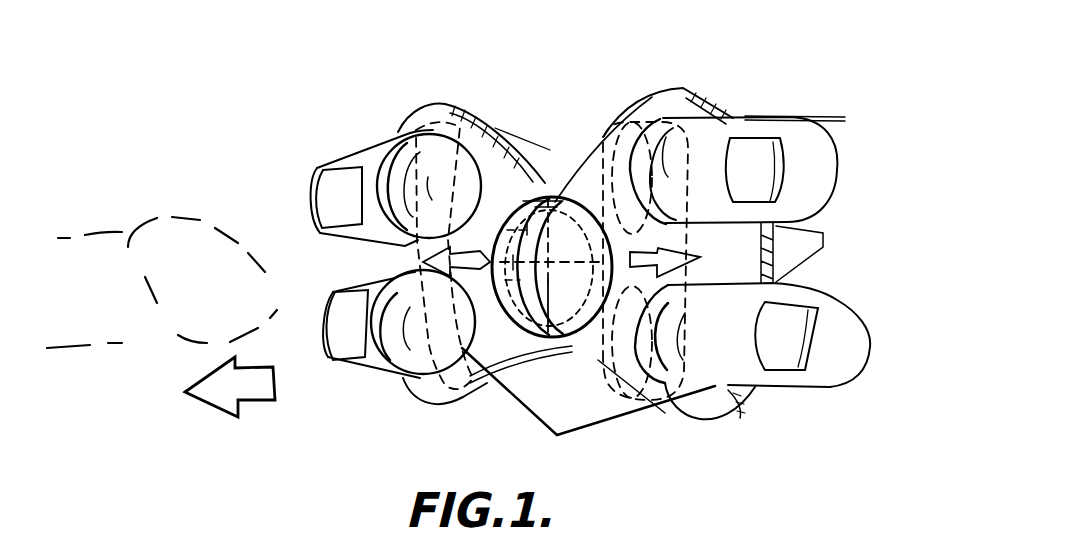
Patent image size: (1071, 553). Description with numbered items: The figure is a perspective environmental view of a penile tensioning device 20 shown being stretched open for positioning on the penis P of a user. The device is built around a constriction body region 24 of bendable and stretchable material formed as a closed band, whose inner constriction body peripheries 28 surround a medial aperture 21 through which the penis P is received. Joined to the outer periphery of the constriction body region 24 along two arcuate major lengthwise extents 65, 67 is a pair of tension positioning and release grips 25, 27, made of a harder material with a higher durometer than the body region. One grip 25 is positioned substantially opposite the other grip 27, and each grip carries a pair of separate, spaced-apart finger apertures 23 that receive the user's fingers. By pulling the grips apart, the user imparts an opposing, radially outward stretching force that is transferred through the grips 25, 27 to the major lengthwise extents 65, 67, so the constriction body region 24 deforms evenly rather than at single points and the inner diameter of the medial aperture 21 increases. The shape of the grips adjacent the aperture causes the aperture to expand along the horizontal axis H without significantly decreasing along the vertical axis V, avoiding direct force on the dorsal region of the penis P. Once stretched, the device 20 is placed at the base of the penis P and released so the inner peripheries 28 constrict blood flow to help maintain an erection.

The penile tensioning device 20 is at (358, 97).
The medial aperture 21 is at (558, 200).
The finger apertures 23 is at (588, 408).
The constriction body region 24 is at (571, 345).
The tension positioning and release grip 25 is at (423, 393).
The tension positioning and release grip 27 is at (712, 410).
The inner constriction body peripheries 28 is at (580, 320).
The major lengthwise extent 65 is at (512, 202).
The major lengthwise extent 67 is at (590, 205).
The penis P is at (150, 335).
The vertical axis V is at (568, 175).
The horizontal axis H is at (532, 277).